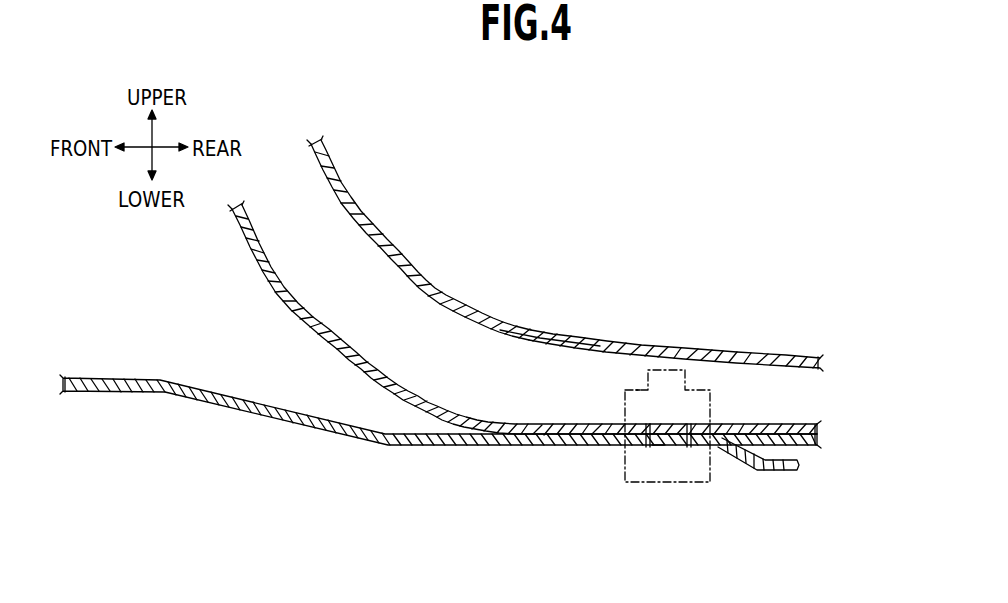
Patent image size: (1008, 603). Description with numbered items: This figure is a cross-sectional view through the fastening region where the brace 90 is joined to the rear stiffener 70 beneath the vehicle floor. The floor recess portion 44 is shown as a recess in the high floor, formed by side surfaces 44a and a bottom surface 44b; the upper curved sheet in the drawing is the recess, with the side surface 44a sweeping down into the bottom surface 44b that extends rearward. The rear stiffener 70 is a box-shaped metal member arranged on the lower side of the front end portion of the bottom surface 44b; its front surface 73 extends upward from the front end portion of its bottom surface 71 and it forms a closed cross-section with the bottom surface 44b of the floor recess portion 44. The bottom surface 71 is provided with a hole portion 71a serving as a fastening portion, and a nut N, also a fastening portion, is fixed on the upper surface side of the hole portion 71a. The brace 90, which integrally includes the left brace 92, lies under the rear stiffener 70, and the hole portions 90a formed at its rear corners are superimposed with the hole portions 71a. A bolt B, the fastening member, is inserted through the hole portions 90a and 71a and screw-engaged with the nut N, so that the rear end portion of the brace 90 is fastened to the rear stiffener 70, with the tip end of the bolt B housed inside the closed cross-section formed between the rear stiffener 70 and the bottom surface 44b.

The floor recess portion 44 is at (565, 250).
The side surfaces 44a is at (362, 213).
The bottom surface 44b is at (695, 348).
The front surface 73 is at (289, 306).
The brace 90 is at (475, 451).
The left brace 92 is at (475, 451).
The hole portions 90a is at (658, 447).
The rear stiffener 70 is at (475, 451).
The bottom surface 71 is at (807, 443).
The hole portion 71a is at (678, 426).
The nut N is at (637, 390).
The bolt B is at (667, 483).